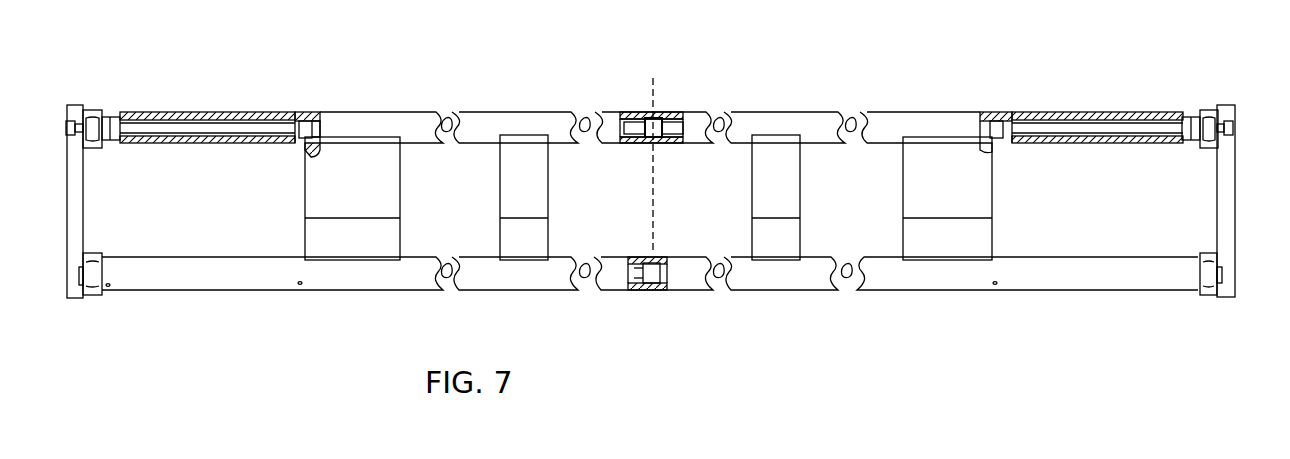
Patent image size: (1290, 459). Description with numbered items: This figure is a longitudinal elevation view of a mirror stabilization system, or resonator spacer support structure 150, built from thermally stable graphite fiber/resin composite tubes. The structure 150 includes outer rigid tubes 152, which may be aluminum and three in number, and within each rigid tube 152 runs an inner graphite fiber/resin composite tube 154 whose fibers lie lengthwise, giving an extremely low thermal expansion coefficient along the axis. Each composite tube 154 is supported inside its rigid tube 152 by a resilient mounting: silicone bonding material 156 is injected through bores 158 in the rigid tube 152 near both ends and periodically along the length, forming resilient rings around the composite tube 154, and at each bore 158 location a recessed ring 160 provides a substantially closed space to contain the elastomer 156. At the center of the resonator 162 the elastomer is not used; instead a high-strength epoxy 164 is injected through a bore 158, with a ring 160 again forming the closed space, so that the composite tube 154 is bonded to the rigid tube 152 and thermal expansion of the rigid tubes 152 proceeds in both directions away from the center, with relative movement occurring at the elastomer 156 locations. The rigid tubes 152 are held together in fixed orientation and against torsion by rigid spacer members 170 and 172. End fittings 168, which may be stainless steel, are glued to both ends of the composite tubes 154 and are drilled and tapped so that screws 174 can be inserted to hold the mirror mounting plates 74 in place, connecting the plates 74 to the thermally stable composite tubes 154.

The resonator spacer support structure 150 is at (834, 40).
The mirror mounting plate 74 is at (75, 204).
The screw 174 is at (73, 120).
The end fitting 168 is at (93, 125).
The silicone bonding material 156 is at (112, 127).
The outer rigid tube 152 is at (212, 115).
The graphite fiber/resin composite tube 154 is at (170, 127).
The bore 158 is at (308, 118).
The recessed ring 160 is at (298, 125).
The high-strength epoxy 164 is at (656, 120).
The center of the resonator 162 is at (650, 72).
The rigid spacer member 170 is at (320, 193).
The rigid spacer member 172 is at (543, 190).